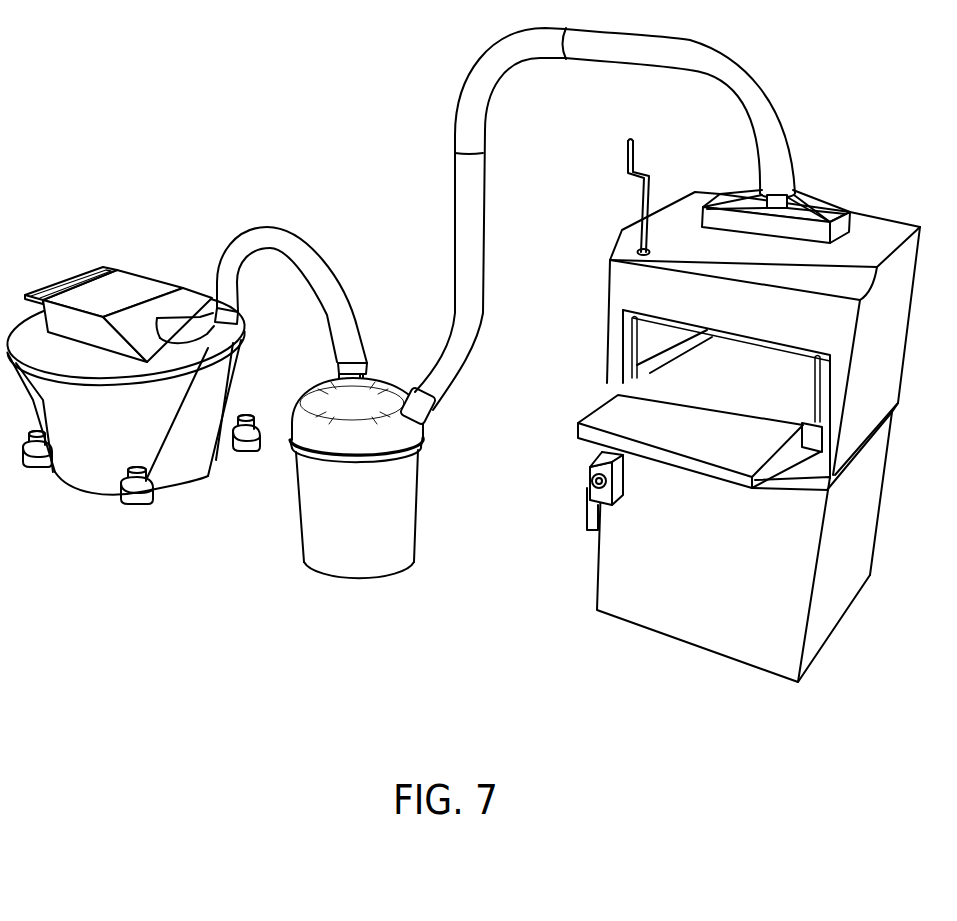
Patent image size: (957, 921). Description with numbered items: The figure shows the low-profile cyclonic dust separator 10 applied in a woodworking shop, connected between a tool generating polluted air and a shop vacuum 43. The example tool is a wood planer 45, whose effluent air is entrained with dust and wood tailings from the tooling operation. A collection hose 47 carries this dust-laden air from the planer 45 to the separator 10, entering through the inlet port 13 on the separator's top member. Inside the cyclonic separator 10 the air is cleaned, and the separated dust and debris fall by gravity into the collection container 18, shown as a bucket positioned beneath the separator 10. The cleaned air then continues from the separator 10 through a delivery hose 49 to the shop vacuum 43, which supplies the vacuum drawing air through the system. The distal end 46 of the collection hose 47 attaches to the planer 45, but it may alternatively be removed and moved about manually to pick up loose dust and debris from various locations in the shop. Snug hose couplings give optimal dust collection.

The dust separator 10 is at (311, 428).
The inlet port 13 is at (440, 432).
The collection container 18 is at (368, 556).
The shop vacuum 43 is at (94, 507).
The wood planer 45 is at (676, 607).
The distal end 46 is at (812, 170).
The collection hose 47 is at (445, 59).
The delivery hose 49 is at (215, 226).